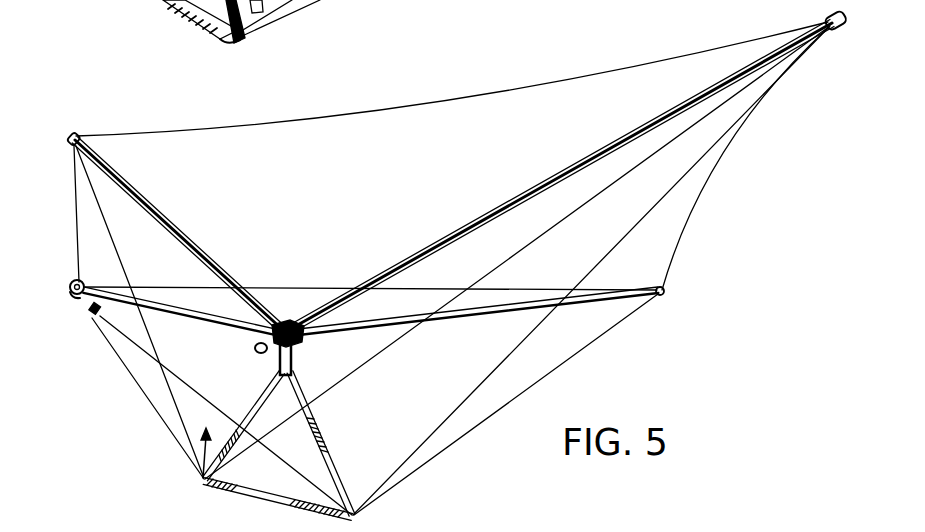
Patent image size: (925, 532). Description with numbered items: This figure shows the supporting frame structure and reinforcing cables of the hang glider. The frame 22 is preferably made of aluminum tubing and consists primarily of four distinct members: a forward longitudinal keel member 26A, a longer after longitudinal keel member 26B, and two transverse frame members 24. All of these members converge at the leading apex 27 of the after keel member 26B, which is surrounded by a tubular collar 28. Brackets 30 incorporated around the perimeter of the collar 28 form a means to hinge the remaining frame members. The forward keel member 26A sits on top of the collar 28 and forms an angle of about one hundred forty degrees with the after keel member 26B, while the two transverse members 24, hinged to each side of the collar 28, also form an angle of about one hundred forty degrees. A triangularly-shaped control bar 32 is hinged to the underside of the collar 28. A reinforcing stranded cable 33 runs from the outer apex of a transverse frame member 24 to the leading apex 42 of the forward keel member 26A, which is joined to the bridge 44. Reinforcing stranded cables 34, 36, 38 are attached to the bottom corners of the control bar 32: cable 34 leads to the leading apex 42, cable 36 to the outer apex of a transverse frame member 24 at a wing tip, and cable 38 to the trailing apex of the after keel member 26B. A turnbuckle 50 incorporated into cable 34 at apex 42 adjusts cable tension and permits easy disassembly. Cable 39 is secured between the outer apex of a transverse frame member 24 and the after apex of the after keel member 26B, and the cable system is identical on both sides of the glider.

The frame 22 is at (200, 472).
The transverse frame member 24 is at (197, 242).
The forward longitudinal keel member 26A is at (145, 296).
The after longitudinal keel member 26B is at (479, 223).
The leading apex 27 is at (255, 348).
The tubular collar 28 is at (284, 322).
The bracket 30 is at (300, 322).
The control bar 32 is at (204, 483).
The reinforcing stranded cable 33 is at (78, 208).
The reinforcing stranded cable 34 is at (122, 364).
The reinforcing stranded cable 36 is at (610, 332).
The reinforcing stranded cable 38 is at (600, 197).
The cable 39 is at (495, 96).
The leading apex 42 is at (70, 294).
The bridge 44 is at (71, 285).
The turnbuckle 50 is at (92, 322).